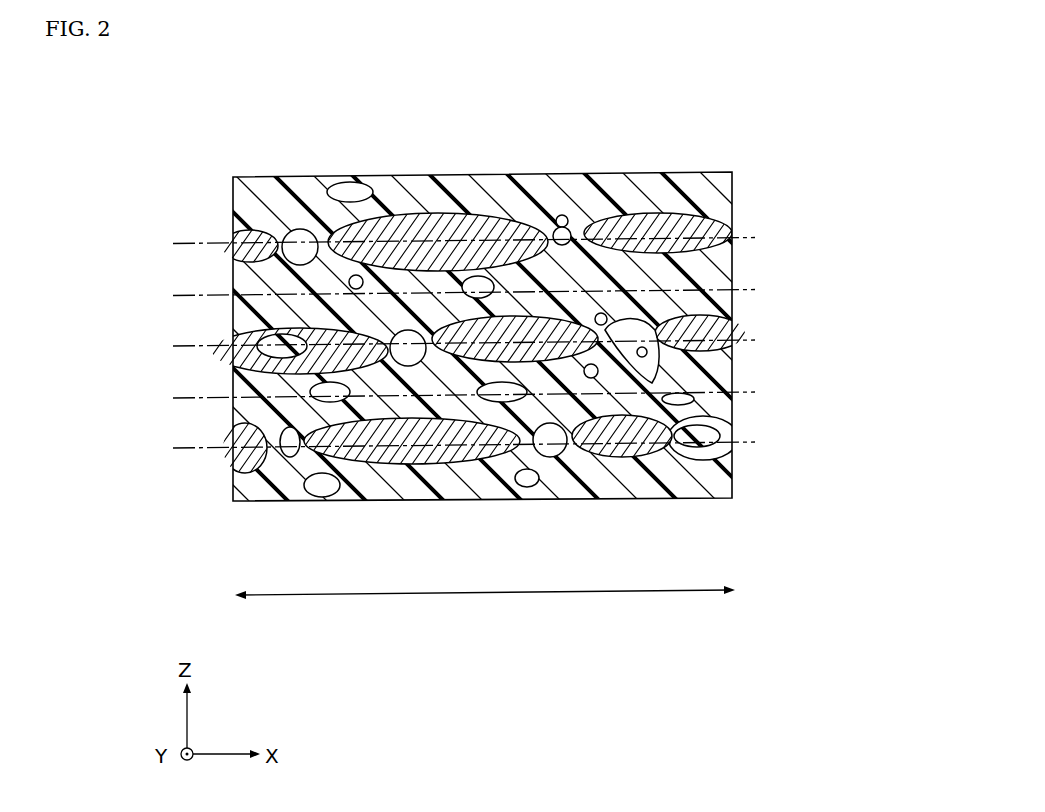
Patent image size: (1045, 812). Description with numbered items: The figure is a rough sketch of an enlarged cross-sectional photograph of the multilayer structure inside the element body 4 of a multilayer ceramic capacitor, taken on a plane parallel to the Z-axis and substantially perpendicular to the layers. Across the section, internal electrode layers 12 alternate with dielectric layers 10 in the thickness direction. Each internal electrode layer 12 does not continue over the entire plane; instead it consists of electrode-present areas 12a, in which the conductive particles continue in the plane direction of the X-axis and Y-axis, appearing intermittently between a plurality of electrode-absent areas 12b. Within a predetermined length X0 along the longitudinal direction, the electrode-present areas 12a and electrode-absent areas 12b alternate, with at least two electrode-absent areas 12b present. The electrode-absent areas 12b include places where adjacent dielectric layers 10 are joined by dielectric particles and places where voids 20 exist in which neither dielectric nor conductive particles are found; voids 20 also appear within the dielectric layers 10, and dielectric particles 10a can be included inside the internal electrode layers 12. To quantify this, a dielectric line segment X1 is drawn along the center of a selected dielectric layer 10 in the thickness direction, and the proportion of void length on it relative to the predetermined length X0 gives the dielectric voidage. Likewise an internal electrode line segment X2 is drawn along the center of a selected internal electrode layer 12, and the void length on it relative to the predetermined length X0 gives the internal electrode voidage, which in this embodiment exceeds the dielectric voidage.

The element body 4 is at (738, 156).
The dielectric layers 10 is at (415, 190).
The dielectric particles 10a is at (273, 352).
The internal electrode layers 12 is at (520, 223).
The electrode-present areas 12a is at (476, 215).
The electrode-absent areas 12b is at (331, 238).
The voids 20 is at (344, 188).
The predetermined length X0 is at (687, 592).
The dielectric line segment X1 is at (768, 290).
The internal electrode line segment X2 is at (768, 238).